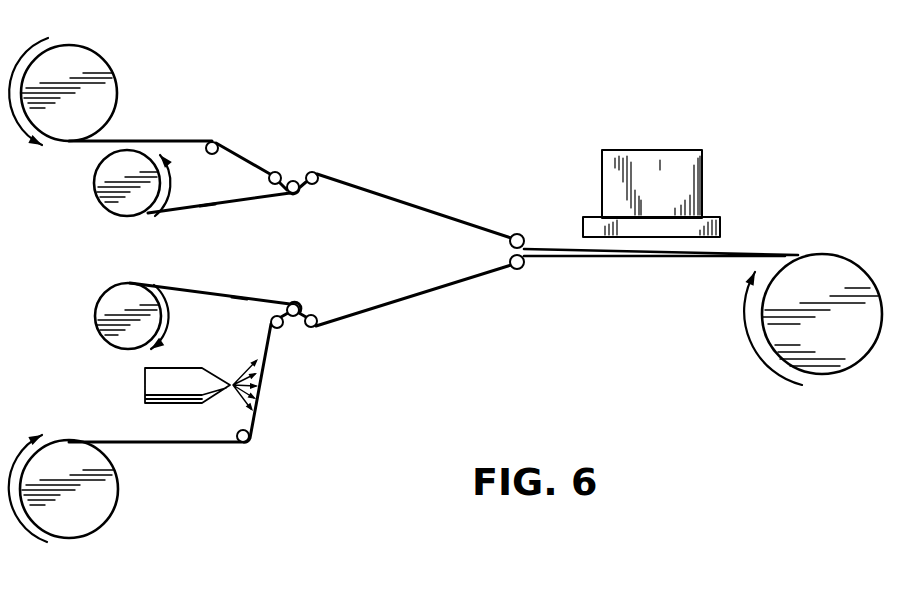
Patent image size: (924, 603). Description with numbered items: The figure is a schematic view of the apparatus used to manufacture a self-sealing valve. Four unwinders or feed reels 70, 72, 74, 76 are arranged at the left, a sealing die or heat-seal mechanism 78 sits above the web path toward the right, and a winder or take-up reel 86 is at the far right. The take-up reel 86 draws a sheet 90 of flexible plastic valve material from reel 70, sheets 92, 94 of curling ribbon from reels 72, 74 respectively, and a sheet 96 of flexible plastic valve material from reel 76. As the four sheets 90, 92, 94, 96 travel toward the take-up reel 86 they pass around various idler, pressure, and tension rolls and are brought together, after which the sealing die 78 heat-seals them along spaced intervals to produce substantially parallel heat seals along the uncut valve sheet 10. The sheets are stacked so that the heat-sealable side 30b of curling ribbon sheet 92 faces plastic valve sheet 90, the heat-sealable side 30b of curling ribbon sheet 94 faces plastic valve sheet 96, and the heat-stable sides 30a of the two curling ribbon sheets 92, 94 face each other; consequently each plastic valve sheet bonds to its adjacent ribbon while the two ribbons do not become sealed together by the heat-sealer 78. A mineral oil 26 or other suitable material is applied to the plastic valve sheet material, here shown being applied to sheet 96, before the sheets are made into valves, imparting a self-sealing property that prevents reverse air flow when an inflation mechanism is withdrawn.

The uncut valve sheet 10 is at (777, 247).
The mineral oil 26 is at (145, 390).
The heat-stable side 30a is at (240, 203).
The heat-sealable side 30b is at (195, 207).
The feed reel 70 is at (98, 83).
The feed reel 72 is at (105, 198).
The feed reel 74 is at (103, 314).
The feed reel 76 is at (97, 507).
The sealing die 78 is at (652, 165).
The take-up reel 86 is at (832, 352).
The sheet of flexible plastic valve material 90 is at (160, 135).
The sheet of curling ribbon 92 is at (188, 214).
The sheet of curling ribbon 94 is at (203, 288).
The sheet of flexible plastic valve material 96 is at (167, 447).